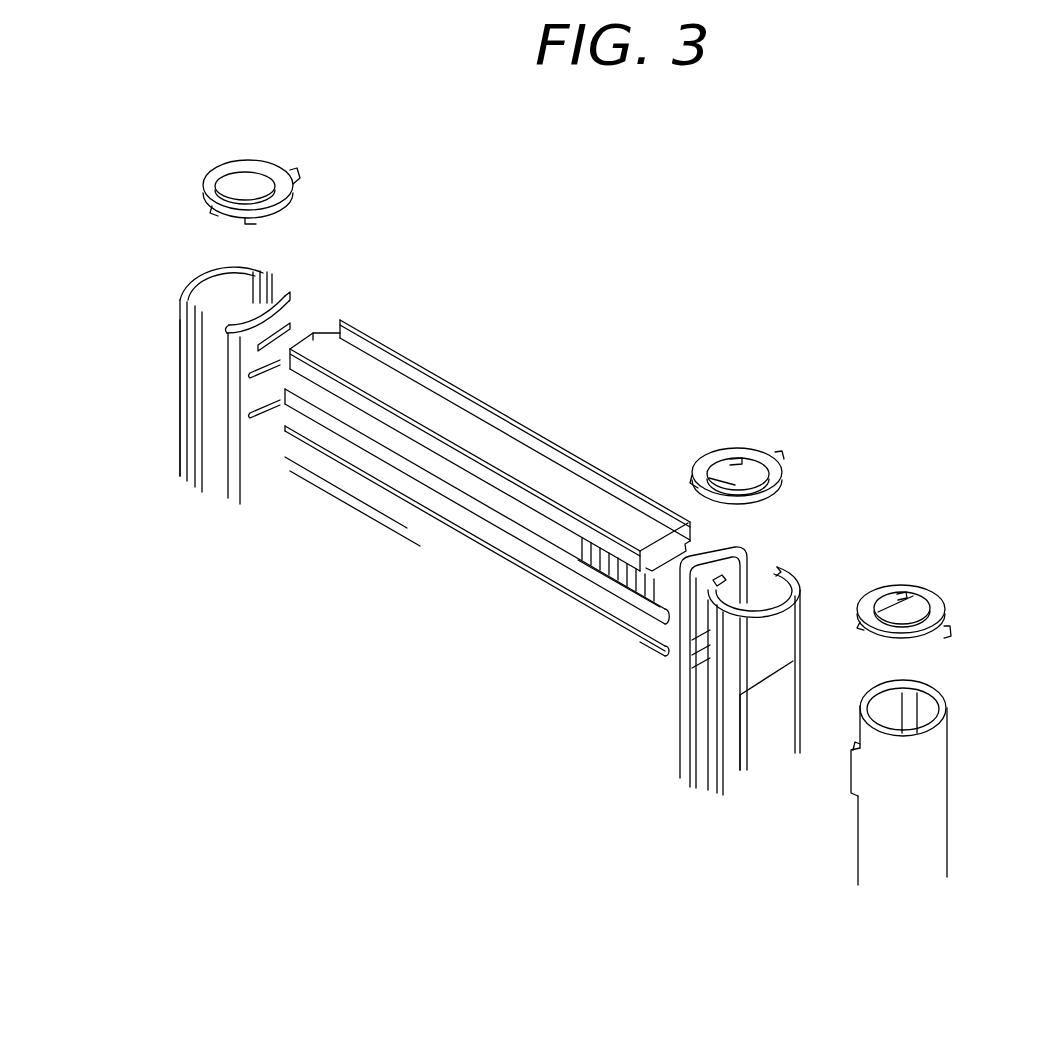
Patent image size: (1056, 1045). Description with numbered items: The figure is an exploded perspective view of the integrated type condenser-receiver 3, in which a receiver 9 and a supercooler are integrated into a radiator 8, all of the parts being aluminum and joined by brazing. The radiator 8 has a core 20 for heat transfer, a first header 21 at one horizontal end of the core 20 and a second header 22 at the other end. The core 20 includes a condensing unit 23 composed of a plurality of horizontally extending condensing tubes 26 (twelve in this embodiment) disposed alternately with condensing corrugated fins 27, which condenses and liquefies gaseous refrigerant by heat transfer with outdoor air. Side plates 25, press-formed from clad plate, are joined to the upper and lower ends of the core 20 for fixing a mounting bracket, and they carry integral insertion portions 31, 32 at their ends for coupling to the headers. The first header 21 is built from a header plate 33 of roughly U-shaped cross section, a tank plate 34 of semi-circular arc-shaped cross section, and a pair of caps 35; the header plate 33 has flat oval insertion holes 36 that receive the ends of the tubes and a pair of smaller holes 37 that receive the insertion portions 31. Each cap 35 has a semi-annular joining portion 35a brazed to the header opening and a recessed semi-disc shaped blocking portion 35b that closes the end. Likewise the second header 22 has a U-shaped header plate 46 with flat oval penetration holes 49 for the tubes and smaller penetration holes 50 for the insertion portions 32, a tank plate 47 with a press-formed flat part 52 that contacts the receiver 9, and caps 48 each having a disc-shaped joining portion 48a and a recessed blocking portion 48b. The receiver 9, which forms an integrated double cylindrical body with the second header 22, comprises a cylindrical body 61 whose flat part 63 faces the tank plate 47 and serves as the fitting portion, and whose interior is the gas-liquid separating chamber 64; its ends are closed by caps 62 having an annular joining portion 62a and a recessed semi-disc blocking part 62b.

The integrated type condenser-receiver 3 is at (254, 152).
The radiator 8 is at (795, 418).
The receiver 9 is at (914, 766).
The core 20 is at (522, 463).
The first header 21 is at (170, 270).
The second header 22 is at (802, 669).
The condensing unit 23 is at (475, 494).
The side plates 25 is at (462, 406).
The condensing tubes 26 is at (468, 520).
The condensing corrugated fins 27 is at (580, 536).
The insertion portion 31 is at (316, 326).
The insertion portion 32 is at (682, 552).
The header plate 33 is at (233, 468).
The tank plate 34 is at (180, 450).
The caps 35 is at (284, 160).
The joining portion 35a is at (290, 176).
The blocking portion 35b is at (238, 187).
The insertion holes 36 is at (262, 412).
The insertion holes 37 is at (297, 322).
The header plate 46 is at (680, 743).
The tank plate 47 is at (781, 694).
The caps 48 is at (751, 418).
The joining portion 48a is at (815, 456).
The blocking portion 48b is at (707, 480).
The penetration holes 49 is at (692, 683).
The penetration holes 50 is at (726, 580).
The flat part 52 is at (760, 724).
The cylindrical body 61 is at (950, 853).
The caps 62 is at (938, 587).
The joining portion 62a is at (948, 626).
The blocking part 62b is at (906, 600).
The flat part 63 is at (851, 827).
The gas-liquid separating chamber 64 is at (903, 705).